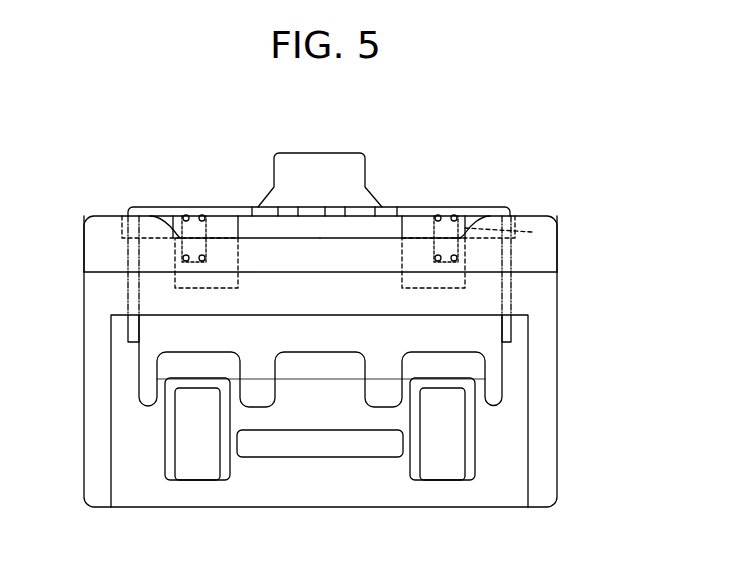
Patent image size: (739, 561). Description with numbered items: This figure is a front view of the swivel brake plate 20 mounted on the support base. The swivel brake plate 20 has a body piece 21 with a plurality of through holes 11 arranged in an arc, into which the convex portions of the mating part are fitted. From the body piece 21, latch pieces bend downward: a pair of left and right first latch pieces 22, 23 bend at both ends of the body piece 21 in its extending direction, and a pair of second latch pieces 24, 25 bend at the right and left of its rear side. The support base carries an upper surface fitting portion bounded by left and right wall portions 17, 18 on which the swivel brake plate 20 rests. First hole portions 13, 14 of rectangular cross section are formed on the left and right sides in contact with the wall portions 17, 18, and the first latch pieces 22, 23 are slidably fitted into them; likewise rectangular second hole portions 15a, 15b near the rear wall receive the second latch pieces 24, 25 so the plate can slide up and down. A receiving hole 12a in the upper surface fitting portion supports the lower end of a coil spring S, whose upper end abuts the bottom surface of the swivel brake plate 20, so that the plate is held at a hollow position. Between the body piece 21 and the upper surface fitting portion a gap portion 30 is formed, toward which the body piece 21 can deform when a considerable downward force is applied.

The through holes 11 is at (265, 200).
The receiving hole 12a is at (175, 252).
The first hole portion 13 is at (48, 229).
The first hole portion 14 is at (595, 244).
The second hole portion 15a is at (195, 290).
The second hole portion 15b is at (423, 290).
The wall portion 17 is at (84, 407).
The wall portion 18 is at (557, 425).
The swivel brake plate 20 is at (180, 187).
The body piece 21 is at (452, 207).
The first latch piece 22 is at (128, 258).
The first latch piece 23 is at (502, 277).
The second latch piece 24 is at (240, 227).
The second latch piece 25 is at (402, 224).
The gap portion 30 is at (310, 227).
The coil spring S is at (198, 216).